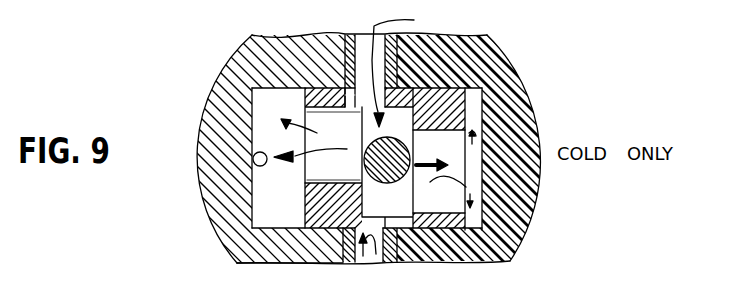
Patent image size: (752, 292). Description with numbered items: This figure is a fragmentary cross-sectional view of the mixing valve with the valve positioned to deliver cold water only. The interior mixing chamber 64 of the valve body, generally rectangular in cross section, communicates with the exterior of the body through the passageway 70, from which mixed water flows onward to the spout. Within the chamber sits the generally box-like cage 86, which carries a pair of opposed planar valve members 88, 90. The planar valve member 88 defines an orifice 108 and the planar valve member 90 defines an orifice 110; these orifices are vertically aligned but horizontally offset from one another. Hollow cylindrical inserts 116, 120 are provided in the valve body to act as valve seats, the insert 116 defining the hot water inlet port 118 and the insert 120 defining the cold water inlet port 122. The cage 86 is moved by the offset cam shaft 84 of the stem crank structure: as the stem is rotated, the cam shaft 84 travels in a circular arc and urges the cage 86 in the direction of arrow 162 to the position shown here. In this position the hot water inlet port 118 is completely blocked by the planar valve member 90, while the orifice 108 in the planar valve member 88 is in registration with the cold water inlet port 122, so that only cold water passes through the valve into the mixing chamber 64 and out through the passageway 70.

The mixing chamber 64 is at (258, 190).
The passageway 70 is at (253, 165).
The cam shaft 84 is at (389, 182).
The cage 86 is at (476, 104).
The planar valve member 88 is at (318, 87).
The planar valve member 90 is at (478, 262).
The orifice 108 is at (349, 93).
The orifice 110 is at (505, 257).
The hollow cylindrical insert 116 is at (240, 240).
The hot water inlet port 118 is at (472, 258).
The hollow cylindrical insert 120 is at (349, 37).
The cold water inlet port 122 is at (411, 69).
The arrow 162 is at (460, 153).